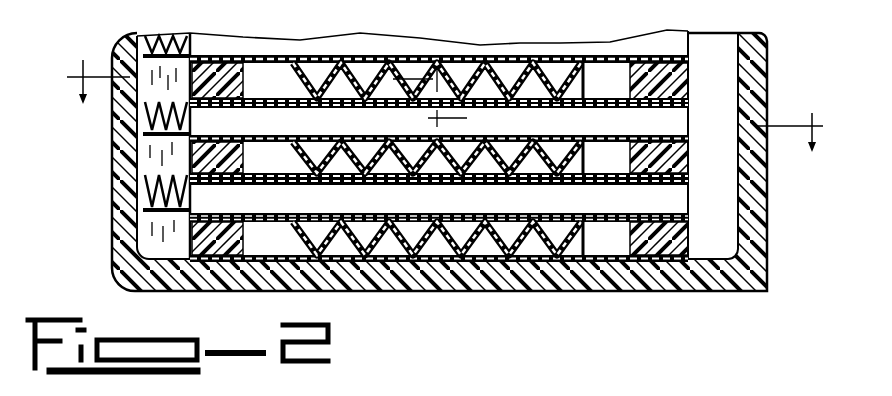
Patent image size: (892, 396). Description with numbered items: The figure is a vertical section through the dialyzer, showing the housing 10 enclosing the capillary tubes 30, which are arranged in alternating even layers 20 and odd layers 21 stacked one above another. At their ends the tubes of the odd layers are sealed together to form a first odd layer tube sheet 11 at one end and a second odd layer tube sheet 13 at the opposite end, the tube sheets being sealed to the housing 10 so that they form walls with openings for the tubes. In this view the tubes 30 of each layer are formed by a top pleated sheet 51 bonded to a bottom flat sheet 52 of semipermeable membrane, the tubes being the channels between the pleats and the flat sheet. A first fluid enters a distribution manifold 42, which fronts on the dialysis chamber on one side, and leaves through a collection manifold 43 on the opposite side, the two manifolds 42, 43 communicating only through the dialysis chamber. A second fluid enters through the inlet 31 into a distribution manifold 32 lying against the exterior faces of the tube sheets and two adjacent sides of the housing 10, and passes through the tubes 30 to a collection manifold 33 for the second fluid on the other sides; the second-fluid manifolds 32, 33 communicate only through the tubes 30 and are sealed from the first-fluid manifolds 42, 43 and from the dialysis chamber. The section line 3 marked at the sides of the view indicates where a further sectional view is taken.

The housing 10 is at (774, 80).
The first odd layer tube sheet 11 is at (650, 258).
The second odd layer tube sheet 13 is at (217, 258).
The even layer 20 is at (568, 63).
The odd layer 21 is at (150, 157).
The capillary tube 30 is at (320, 165).
The second-fluid inlet 31 is at (692, 308).
The second-fluid distribution manifold 32 is at (730, 191).
The second-fluid collection manifold 33 is at (160, 236).
The first-fluid distribution manifold 42 is at (617, 97).
The first-fluid collection manifold 43 is at (267, 104).
The top pleated sheet 51 is at (582, 89).
The bottom flat sheet 52 is at (293, 93).
The section line 3- 3 is at (446, 122).